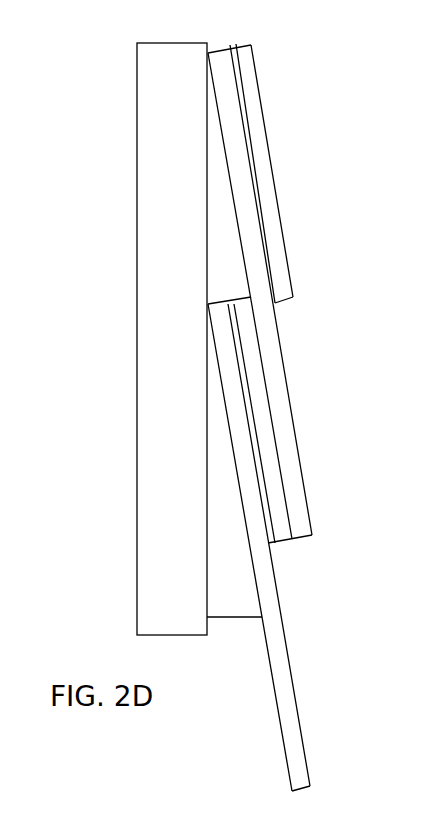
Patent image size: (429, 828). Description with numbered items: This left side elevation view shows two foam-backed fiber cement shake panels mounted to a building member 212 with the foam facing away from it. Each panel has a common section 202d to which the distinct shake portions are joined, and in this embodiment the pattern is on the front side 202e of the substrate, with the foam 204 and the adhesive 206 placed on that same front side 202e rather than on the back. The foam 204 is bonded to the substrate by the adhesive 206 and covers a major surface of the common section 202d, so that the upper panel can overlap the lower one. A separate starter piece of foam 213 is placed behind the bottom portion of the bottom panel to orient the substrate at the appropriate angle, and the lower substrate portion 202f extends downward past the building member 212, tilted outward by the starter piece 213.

The base / support member 212 is at (189, 350).
The starter piece of foam 213 is at (233, 620).
The common section 202d is at (240, 92).
The front side of the substrate 202e is at (283, 353).
The panel segment 202f is at (267, 650).
The foam 204 is at (273, 172).
The adhesive 206 is at (263, 205).